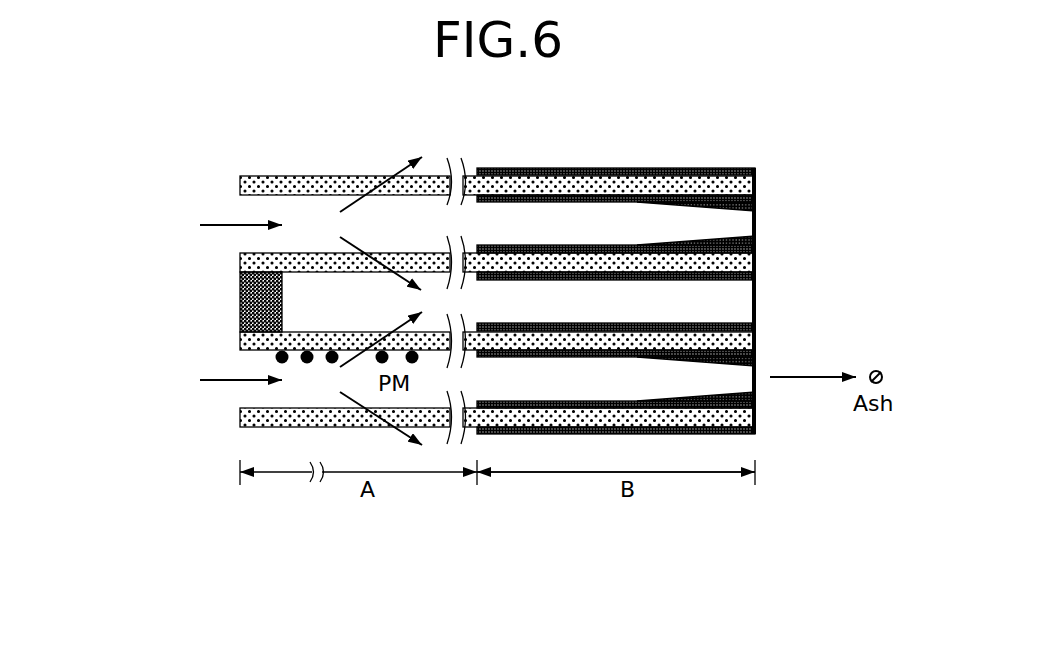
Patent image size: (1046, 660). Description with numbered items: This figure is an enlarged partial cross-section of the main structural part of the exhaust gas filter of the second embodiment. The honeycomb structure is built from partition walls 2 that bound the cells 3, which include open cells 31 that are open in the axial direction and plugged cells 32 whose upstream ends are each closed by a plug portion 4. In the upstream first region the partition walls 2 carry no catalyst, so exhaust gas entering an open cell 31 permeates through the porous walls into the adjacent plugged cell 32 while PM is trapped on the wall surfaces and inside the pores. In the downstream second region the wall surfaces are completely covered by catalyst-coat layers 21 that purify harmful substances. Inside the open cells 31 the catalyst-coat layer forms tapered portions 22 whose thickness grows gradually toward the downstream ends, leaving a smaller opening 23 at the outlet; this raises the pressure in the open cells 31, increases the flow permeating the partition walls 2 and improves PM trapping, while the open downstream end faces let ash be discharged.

The partition wall 2 is at (307, 261).
The cell 3 is at (409, 373).
The open cell 31 is at (262, 398).
The plugged cell 32 is at (300, 320).
The plug portion 4 is at (262, 292).
The catalyst-coat layer 21 is at (565, 247).
The tapered portion 22 is at (755, 197).
The opening 23 is at (730, 373).